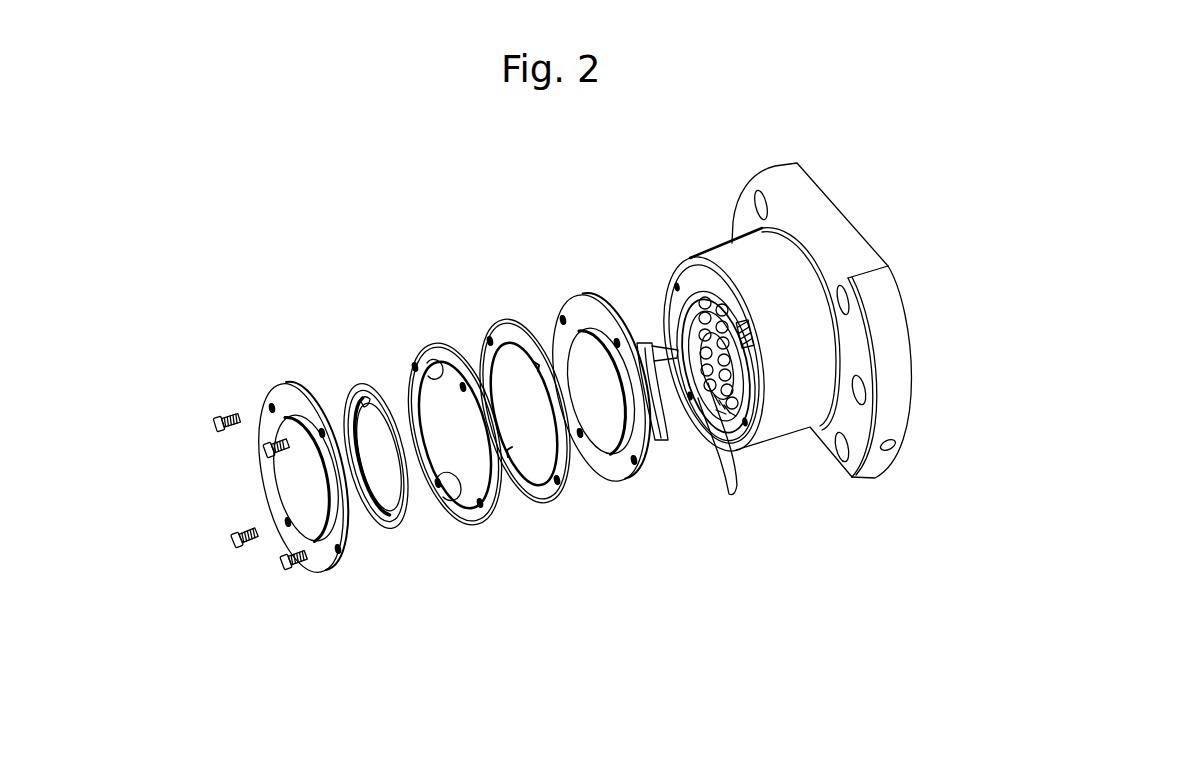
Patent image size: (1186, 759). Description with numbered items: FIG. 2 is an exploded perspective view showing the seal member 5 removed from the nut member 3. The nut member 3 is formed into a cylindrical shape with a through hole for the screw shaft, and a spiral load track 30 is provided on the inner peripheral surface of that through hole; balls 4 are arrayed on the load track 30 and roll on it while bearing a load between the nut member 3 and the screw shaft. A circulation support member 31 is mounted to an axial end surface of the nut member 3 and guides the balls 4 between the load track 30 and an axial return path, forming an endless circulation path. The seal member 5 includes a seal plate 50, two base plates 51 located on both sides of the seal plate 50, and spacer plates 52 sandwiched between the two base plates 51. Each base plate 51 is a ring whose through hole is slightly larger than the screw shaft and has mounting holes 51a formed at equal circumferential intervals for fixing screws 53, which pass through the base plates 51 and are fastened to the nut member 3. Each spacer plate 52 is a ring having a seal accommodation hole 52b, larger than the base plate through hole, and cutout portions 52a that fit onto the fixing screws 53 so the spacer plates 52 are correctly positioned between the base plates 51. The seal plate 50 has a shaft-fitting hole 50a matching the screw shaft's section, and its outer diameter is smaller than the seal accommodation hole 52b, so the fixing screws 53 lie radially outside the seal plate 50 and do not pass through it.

The nut member 3 is at (706, 240).
The balls 4 is at (718, 458).
The seal member 5 is at (557, 238).
The load track 30 is at (679, 314).
The circulation support member 31 is at (674, 440).
The seal plate 50 is at (392, 530).
The shaft-fitting hole 50a is at (352, 402).
The base plate 51 is at (324, 568).
The mounting holes 51a is at (343, 563).
The spacer plate 52 is at (527, 484).
The cutout portions 52a is at (460, 524).
The seal accommodation hole 52b is at (426, 362).
The fixing screws 53 is at (300, 566).